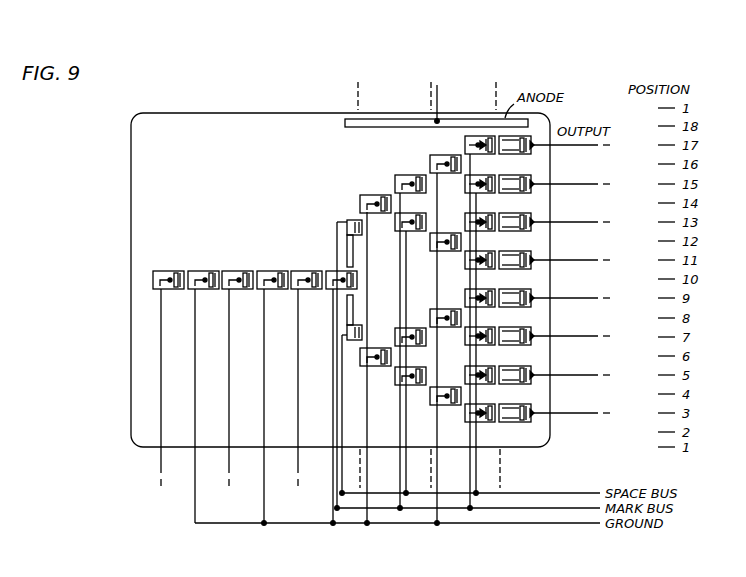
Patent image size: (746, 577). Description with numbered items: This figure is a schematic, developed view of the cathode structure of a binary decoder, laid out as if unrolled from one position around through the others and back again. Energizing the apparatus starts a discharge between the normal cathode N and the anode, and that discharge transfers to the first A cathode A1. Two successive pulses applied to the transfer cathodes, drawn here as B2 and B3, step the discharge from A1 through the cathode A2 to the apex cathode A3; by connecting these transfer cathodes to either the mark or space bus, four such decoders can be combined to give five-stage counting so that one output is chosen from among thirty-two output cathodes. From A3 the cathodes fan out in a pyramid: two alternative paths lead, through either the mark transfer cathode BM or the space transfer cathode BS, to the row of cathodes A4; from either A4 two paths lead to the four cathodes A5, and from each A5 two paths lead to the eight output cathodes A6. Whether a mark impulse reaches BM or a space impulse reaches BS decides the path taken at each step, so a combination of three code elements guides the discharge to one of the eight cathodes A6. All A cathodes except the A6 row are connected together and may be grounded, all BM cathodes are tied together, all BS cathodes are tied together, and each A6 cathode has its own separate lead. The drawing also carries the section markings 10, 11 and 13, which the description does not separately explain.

The normal cathode N is at (168, 368).
The first A cathode A1 is at (203, 387).
The transfer cathode B2 is at (237, 368).
The A cathode A2 is at (272, 388).
The B-type counting cell 3 B3 is at (306, 368).
The apex cathode A3 is at (333, 269).
The A4 cathodes A4 is at (356, 381).
The A5 cathodes A5 is at (445, 332).
The output cathodes A6 is at (520, 289).
The mark transfer cathode BM is at (346, 224).
The space transfer cathode BS is at (355, 302).
The first counting section 10 is at (358, 64).
The second counting section 11 is at (431, 64).
The third counting section 13 is at (496, 64).